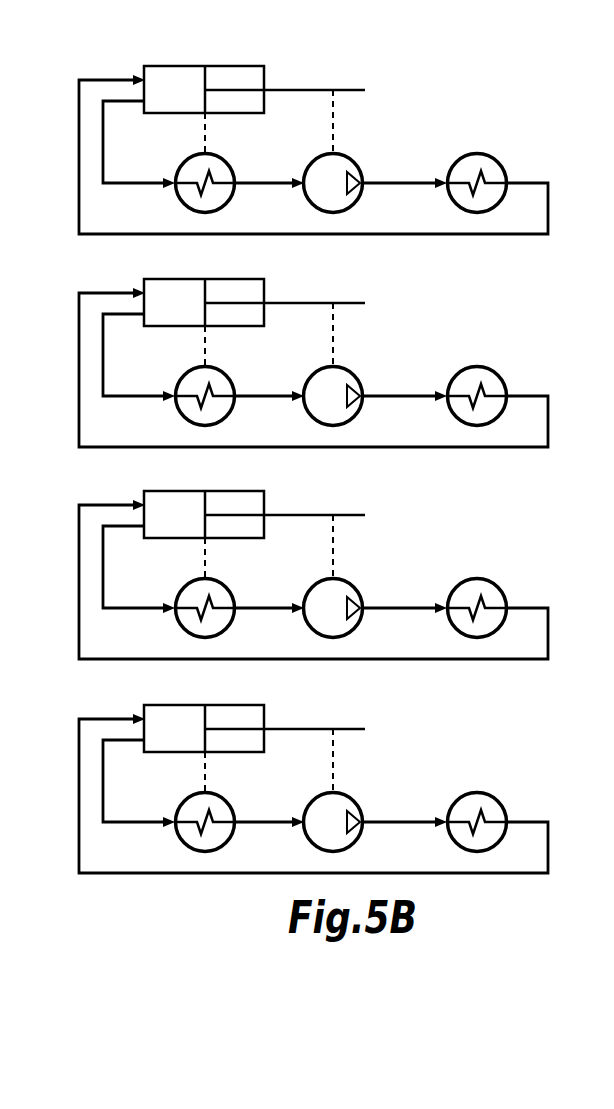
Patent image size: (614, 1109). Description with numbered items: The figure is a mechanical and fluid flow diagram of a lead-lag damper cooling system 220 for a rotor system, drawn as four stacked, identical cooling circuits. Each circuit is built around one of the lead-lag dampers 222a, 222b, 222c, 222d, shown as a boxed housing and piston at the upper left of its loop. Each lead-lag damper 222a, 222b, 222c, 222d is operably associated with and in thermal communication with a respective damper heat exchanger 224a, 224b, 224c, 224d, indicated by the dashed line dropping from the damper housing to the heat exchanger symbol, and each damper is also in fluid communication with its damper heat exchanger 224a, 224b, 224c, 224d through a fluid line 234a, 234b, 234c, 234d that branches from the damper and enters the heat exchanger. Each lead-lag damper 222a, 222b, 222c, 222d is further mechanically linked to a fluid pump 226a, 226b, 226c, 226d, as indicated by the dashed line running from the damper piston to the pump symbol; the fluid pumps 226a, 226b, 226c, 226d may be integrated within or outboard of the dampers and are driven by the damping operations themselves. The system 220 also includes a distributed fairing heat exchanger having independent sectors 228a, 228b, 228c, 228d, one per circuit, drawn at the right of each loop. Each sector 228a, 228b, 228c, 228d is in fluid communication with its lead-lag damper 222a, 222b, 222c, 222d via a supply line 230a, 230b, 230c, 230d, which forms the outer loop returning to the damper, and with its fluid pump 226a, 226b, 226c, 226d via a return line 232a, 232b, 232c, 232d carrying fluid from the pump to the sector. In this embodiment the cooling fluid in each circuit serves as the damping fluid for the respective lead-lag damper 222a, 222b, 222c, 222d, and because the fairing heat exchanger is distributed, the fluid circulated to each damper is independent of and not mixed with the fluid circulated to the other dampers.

The lead-lag damper cooling system 220 is at (522, 97).
The lead-lag damper 222a is at (236, 66).
The lead-lag damper 222b is at (254, 307).
The lead-lag damper 222c is at (254, 519).
The lead-lag damper 222d is at (254, 733).
The damper heat exchanger 224a is at (222, 158).
The damper heat exchanger 224b is at (241, 382).
The damper heat exchanger 224c is at (241, 594).
The damper heat exchanger 224d is at (241, 808).
The fluid pump 226a is at (341, 156).
The fluid pump 226b is at (369, 372).
The fluid pump 226c is at (368, 584).
The fluid pump 226d is at (369, 798).
The fairing heat exchanger sector 228a is at (478, 155).
The fairing heat exchanger sector 228b is at (505, 382).
The fairing heat exchanger sector 228c is at (505, 594).
The fairing heat exchanger sector 228d is at (505, 808).
The supply line 230a is at (108, 80).
The supply line 230b is at (290, 353).
The supply line 230c is at (290, 565).
The supply line 230d is at (290, 779).
The return line 232a is at (403, 183).
The return line 232b is at (404, 371).
The return line 232c is at (404, 583).
The return line 232d is at (404, 797).
The fluid line 234a is at (103, 149).
The fluid line 234b is at (143, 357).
The fluid line 234c is at (142, 569).
The fluid line 234d is at (143, 783).